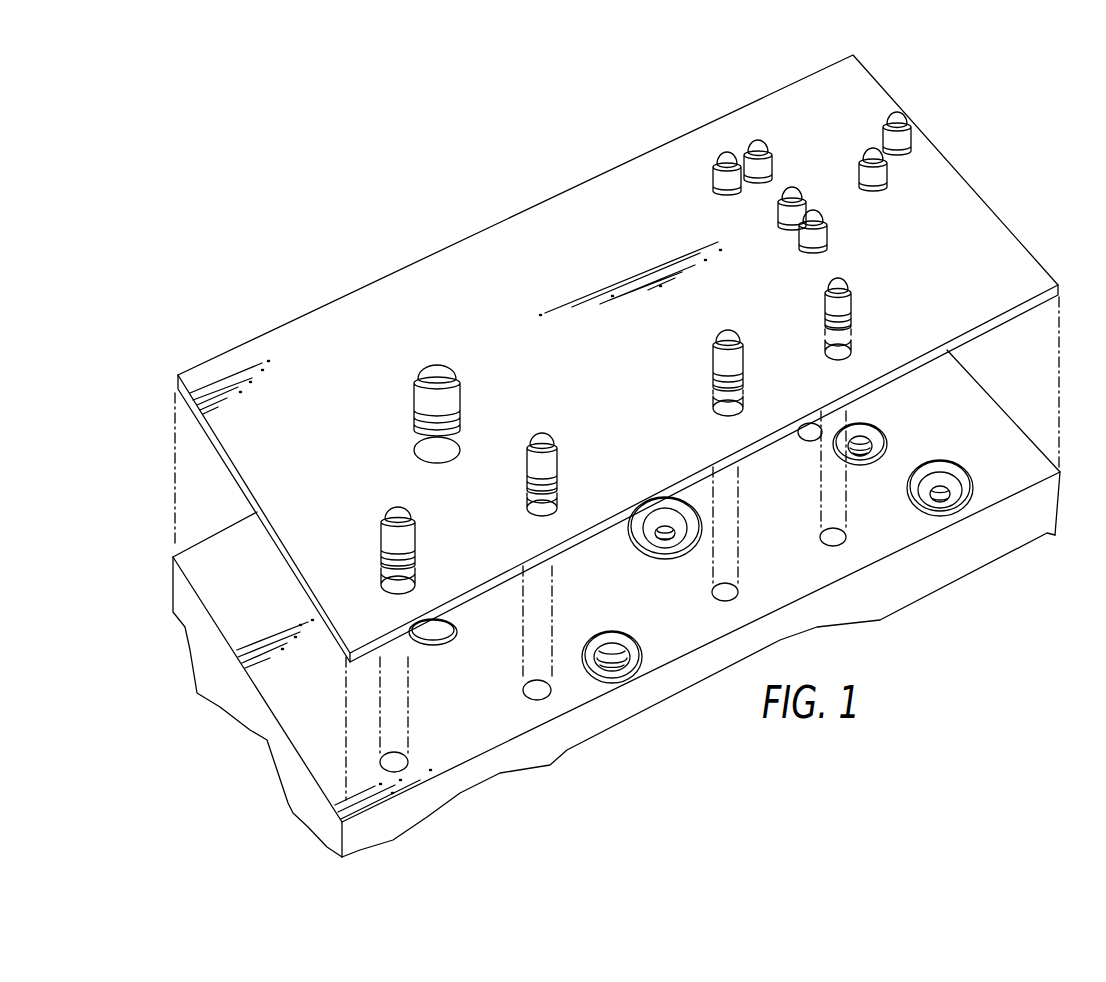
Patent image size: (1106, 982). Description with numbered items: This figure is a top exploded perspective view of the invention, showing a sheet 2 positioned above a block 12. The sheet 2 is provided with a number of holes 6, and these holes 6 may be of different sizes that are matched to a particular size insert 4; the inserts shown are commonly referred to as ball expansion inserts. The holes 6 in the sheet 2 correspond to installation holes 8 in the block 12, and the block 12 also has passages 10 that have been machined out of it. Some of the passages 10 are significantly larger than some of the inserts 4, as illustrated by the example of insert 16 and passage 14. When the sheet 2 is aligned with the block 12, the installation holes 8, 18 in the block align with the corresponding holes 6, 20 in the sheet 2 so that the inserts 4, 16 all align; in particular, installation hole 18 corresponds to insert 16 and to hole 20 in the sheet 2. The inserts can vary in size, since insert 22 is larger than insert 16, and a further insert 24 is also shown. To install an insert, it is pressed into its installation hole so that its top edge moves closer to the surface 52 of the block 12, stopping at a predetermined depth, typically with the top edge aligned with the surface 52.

The sheet 2 is at (467, 272).
The insert 4 is at (842, 307).
The hole 6 is at (842, 353).
The installation hole 8 is at (836, 533).
The passage 10 is at (660, 530).
The block 12 is at (643, 690).
The passage 14 is at (608, 662).
The insert 16 is at (720, 357).
The installation hole 18 is at (728, 594).
The hole 20 is at (722, 404).
The insert 22 is at (427, 403).
The pin 24 is at (552, 460).
The surface 52 is at (493, 730).